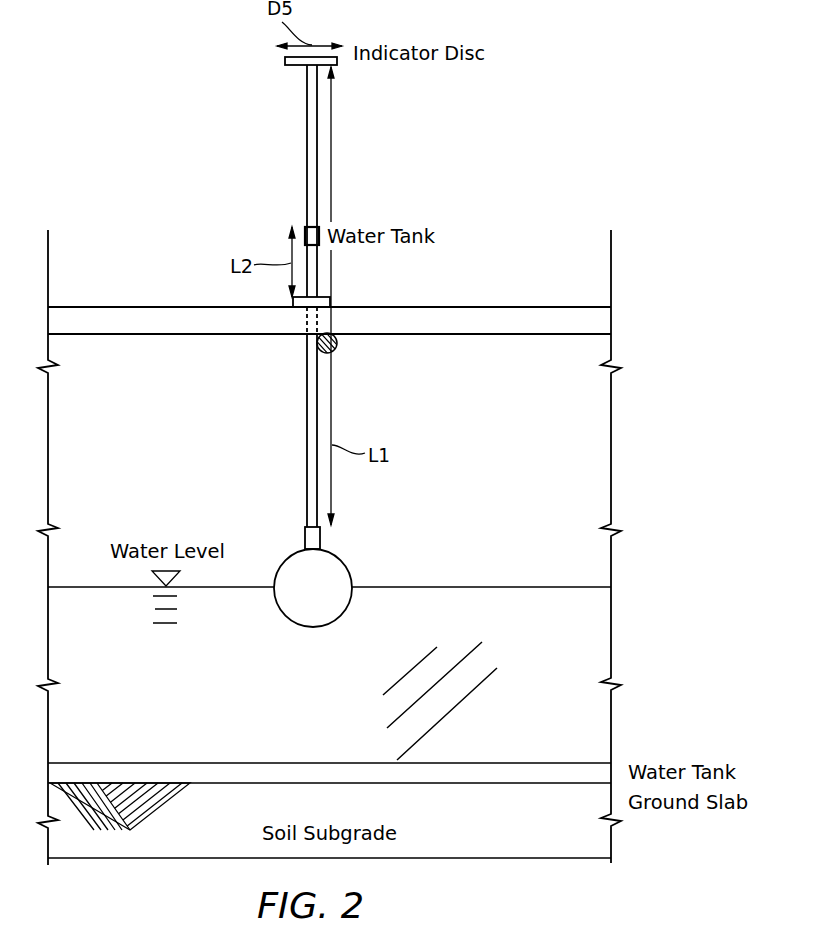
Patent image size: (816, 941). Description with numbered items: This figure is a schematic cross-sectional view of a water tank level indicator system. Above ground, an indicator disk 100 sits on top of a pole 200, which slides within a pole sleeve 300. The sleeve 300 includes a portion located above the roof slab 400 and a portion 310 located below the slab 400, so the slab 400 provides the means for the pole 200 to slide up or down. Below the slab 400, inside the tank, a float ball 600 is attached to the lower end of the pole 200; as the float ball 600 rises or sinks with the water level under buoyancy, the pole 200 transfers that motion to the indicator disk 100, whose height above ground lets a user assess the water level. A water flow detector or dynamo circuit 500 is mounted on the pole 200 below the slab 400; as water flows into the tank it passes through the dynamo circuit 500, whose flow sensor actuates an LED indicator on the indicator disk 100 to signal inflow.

The indicator disk 100 is at (338, 65).
The pole 200 is at (306, 137).
The pole sleeve 300 is at (313, 284).
The sleeve portion below slab 310 is at (306, 370).
The roof slab 400 is at (514, 326).
The dynamo circuit 500 is at (336, 350).
The float ball 600 is at (300, 620).